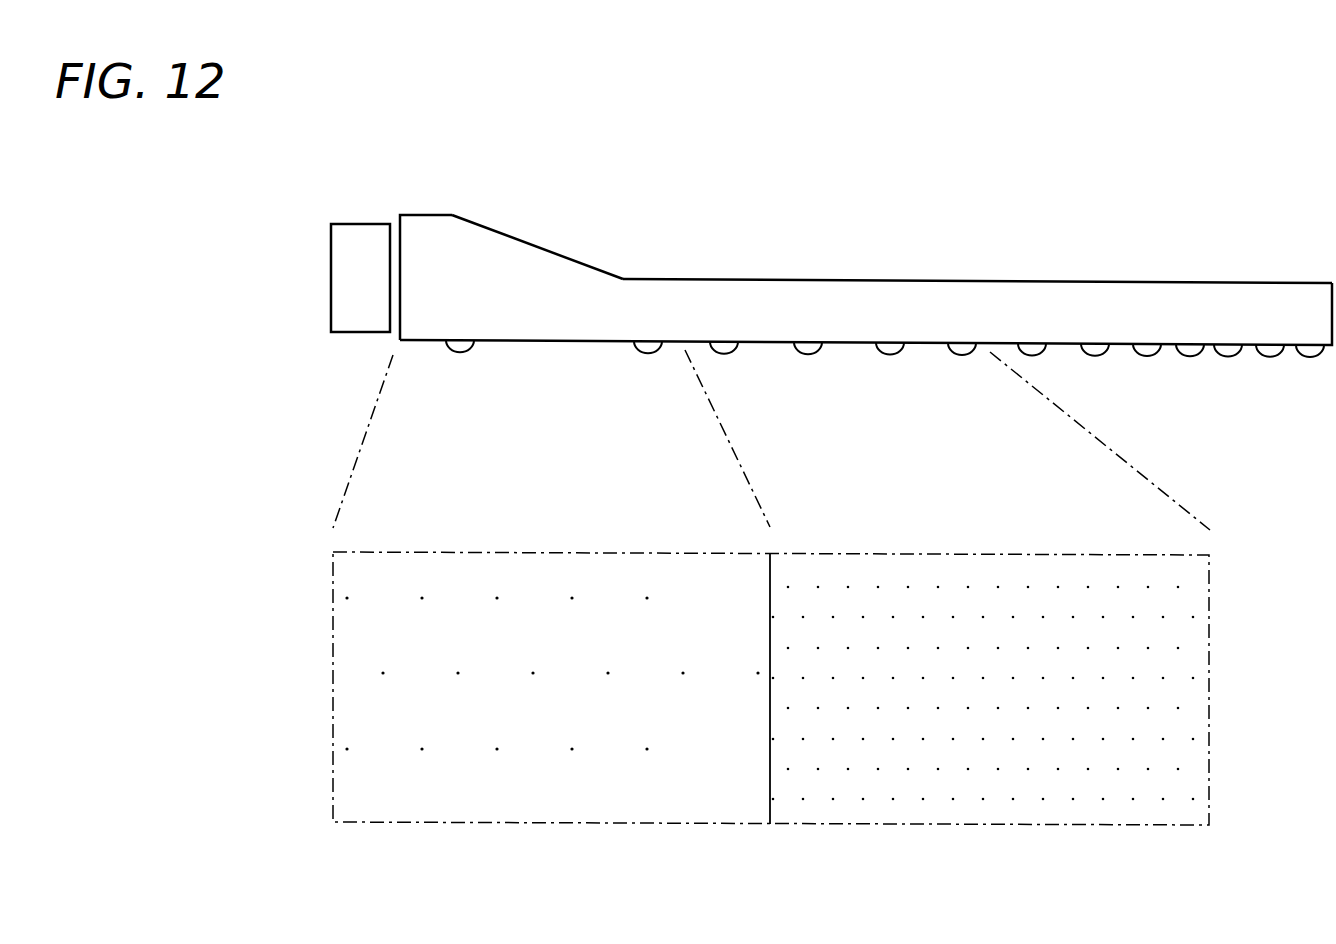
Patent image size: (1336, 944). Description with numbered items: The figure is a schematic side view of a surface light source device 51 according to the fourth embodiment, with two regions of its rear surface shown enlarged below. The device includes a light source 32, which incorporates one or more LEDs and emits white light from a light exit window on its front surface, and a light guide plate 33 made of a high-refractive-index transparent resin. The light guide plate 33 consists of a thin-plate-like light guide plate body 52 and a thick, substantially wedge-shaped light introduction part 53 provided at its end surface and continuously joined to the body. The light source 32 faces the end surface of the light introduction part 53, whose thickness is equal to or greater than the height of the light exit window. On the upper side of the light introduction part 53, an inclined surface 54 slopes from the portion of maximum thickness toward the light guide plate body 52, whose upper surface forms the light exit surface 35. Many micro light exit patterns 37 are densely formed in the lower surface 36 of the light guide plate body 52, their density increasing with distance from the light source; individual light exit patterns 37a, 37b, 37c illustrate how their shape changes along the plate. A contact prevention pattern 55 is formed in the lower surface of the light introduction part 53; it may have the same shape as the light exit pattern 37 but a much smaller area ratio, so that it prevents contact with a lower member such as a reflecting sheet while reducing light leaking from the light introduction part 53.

The surface light source device 51 is at (1183, 217).
The light source 32 is at (350, 271).
The light guide plate 33 is at (1092, 305).
The light exit surface 35 is at (815, 278).
The lower surface 36 is at (783, 521).
The light exit pattern 37 is at (1165, 620).
The light exit pattern 37a is at (648, 354).
The light exit pattern 37b is at (733, 354).
The light exit pattern 37c is at (820, 354).
The light guide plate body 52 is at (938, 300).
The light introduction part 53 is at (442, 248).
The inclined surface 54 is at (567, 255).
The contact prevention pattern 55 is at (455, 356).